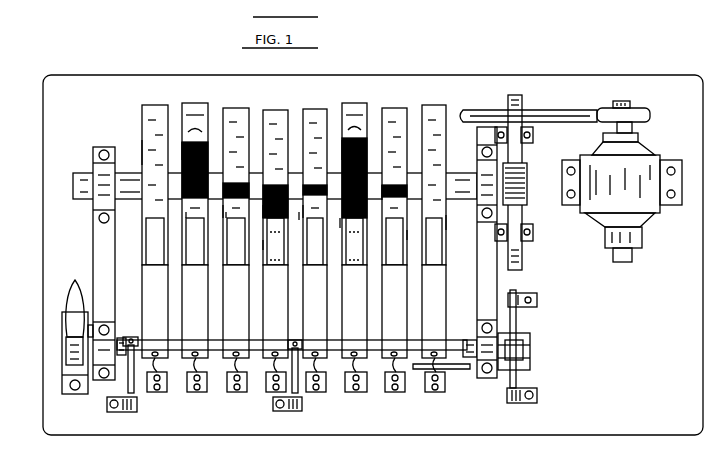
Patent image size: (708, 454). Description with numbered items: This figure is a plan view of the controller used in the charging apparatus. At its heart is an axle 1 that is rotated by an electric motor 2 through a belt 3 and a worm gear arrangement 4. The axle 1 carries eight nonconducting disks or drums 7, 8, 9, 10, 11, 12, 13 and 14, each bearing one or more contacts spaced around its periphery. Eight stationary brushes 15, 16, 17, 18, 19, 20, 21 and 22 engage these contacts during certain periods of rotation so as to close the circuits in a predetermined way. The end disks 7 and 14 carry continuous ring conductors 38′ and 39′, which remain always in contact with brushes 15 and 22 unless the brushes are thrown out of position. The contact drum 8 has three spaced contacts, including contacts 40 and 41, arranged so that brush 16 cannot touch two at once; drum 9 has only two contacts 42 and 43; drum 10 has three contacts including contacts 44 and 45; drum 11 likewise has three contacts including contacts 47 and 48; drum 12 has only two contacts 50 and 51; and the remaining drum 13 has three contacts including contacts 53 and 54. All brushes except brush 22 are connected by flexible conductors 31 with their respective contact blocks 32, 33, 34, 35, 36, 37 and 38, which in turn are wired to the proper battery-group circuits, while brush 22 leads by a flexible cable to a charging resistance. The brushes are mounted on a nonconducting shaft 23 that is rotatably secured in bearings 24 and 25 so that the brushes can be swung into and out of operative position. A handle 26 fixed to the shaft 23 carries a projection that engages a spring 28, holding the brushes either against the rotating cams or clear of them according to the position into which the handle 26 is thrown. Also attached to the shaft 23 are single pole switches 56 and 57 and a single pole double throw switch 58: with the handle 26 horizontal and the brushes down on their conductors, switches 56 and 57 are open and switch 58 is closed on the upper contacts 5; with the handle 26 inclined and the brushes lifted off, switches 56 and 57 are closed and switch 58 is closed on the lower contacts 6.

The axle 1 is at (86, 175).
The electric motor 2 is at (592, 213).
The belt 3 is at (578, 110).
The worm gear arrangement 4 is at (527, 180).
The upper contacts 5 is at (520, 295).
The lower contacts 6 is at (517, 403).
The disk 7 is at (141, 152).
The contact drum 8 is at (182, 150).
The drum 9 is at (223, 213).
The drum 10 is at (263, 216).
The drum 11 is at (301, 203).
The drum 12 is at (341, 160).
The disk 13 is at (383, 198).
The disk 14 is at (446, 217).
The stationary brush 15 is at (143, 302).
The stationary brush 16 is at (192, 302).
The stationary brush 17 is at (232, 302).
The stationary brush 18 is at (270, 319).
The stationary brush 19 is at (312, 290).
The stationary brush 20 is at (350, 302).
The stationary brush 21 is at (390, 302).
The brush 22 is at (428, 302).
The nonconducting shaft 23 is at (219, 357).
The bearing 24 is at (95, 378).
The bearing 25 is at (477, 378).
The handle 26 is at (75, 281).
The spring 28 is at (62, 332).
The flexible conductors 31 is at (170, 372).
The contact block 32 is at (155, 393).
The contact block 33 is at (195, 393).
The contact block 34 is at (240, 393).
The contact block 35 is at (274, 392).
The contact block 36 is at (320, 393).
The contact block 37 is at (363, 392).
The contact block 38 is at (400, 392).
The continuous ring conductor 38′ is at (155, 106).
The continuous ring conductor 39′ is at (434, 106).
The contact 40 is at (184, 214).
The contact 41 is at (195, 104).
The contact 42 is at (224, 214).
The contact 43 is at (236, 109).
The contact 44 is at (262, 245).
The contact 45 is at (275, 110).
The contact 47 is at (298, 218).
The contact 48 is at (315, 109).
The contact 50 is at (340, 225).
The contact 51 is at (354, 104).
The contact 53 is at (408, 235).
The contact 54 is at (395, 108).
The single pole switch 56 is at (128, 388).
The single pole switch 57 is at (300, 385).
The single pole double throw switch 58 is at (527, 337).